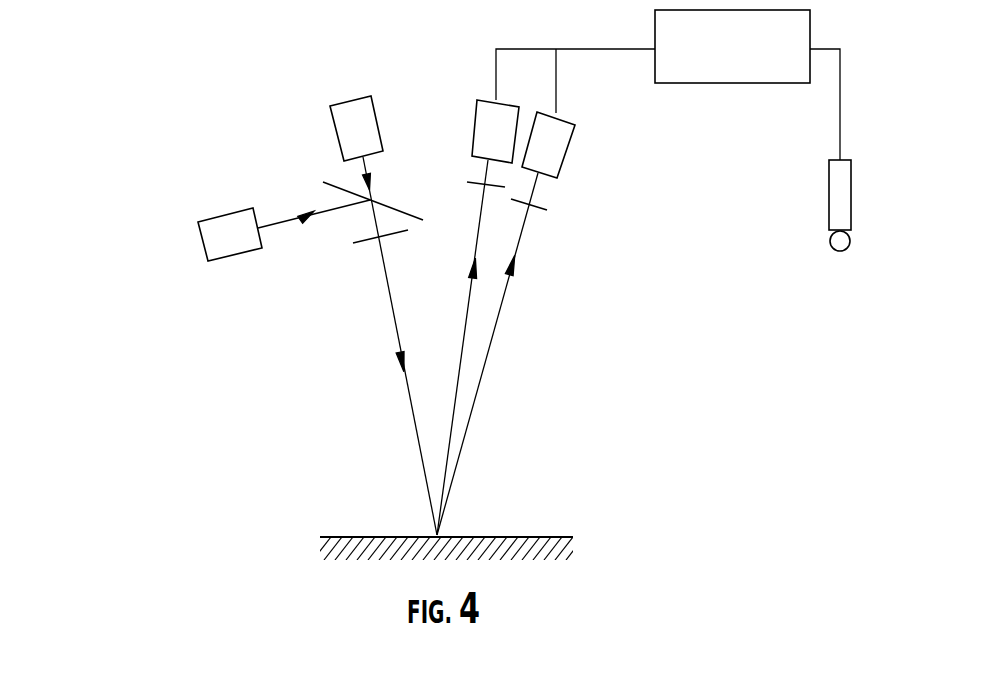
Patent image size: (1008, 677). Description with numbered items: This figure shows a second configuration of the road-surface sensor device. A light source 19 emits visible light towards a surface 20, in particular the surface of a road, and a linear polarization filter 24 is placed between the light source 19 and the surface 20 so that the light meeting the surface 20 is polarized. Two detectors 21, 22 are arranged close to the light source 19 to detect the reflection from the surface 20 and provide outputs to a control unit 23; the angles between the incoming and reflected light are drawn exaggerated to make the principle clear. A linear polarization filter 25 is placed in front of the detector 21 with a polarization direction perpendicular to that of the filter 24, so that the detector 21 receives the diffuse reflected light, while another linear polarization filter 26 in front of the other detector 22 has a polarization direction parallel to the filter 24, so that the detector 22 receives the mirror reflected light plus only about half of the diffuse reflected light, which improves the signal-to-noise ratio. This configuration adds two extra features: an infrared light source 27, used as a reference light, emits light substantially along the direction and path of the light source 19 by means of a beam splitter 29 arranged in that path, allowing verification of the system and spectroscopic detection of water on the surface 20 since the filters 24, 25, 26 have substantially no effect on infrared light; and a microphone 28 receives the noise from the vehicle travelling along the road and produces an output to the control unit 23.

The light source 19 is at (353, 110).
The surface 20 is at (361, 537).
The detector 21 is at (487, 130).
The detector 22 is at (552, 143).
The control unit 23 is at (741, 77).
The linear polarization filter 24 is at (372, 245).
The linear polarization filter 25 is at (473, 189).
The linear polarization filter 26 is at (538, 212).
The infrared light source 27 is at (214, 227).
The microphone 28 is at (833, 203).
The beam splitter 29 is at (337, 185).